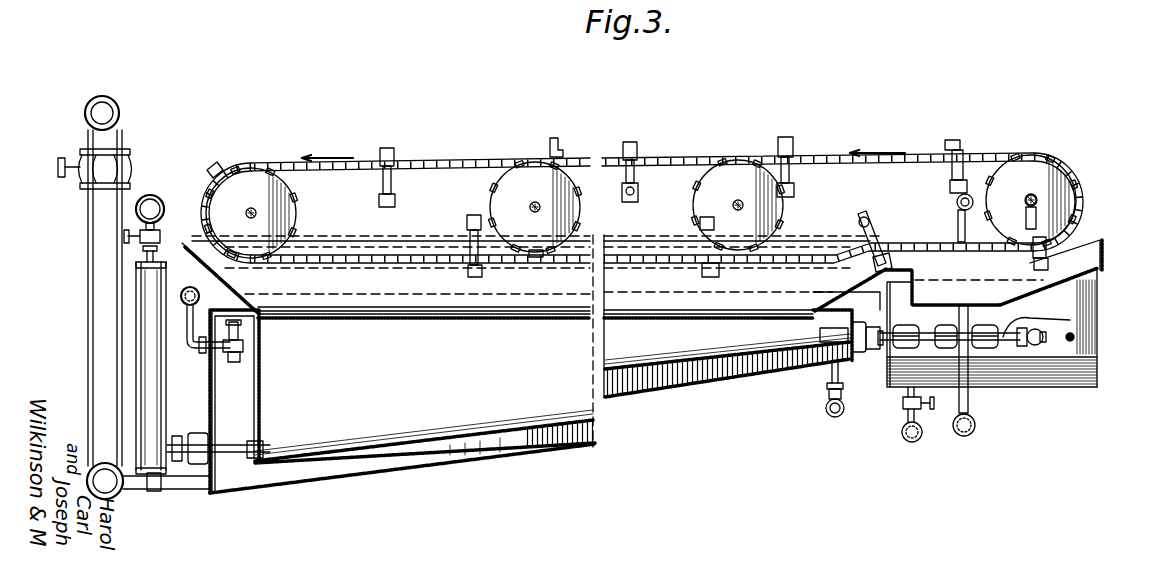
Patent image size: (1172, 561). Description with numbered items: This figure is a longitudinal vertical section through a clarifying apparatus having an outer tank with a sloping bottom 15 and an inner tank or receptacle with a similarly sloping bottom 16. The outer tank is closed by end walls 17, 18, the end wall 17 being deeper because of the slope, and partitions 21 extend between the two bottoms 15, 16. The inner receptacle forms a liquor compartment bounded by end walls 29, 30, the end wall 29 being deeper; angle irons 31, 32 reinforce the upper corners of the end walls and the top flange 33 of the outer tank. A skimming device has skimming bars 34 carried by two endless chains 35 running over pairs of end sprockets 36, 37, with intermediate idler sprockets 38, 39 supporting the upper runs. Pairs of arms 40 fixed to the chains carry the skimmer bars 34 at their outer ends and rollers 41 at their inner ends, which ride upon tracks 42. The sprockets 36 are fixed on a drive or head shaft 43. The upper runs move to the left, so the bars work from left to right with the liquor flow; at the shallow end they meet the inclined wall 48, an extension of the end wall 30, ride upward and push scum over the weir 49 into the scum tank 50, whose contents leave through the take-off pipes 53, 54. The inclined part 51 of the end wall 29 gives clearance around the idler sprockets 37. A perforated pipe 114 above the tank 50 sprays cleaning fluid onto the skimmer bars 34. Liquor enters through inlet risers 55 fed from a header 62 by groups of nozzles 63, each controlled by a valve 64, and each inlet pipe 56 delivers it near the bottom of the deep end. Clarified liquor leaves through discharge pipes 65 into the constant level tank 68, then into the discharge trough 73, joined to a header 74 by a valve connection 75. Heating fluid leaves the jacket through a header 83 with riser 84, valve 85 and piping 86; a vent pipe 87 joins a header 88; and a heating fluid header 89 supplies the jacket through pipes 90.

The sloping bottom of outer tank 15 is at (614, 402).
The sloping bottom of inner tank 16 is at (378, 442).
The end wall 17 is at (210, 376).
The end wall 18 is at (858, 362).
The partitions 21 is at (346, 488).
The end wall 29 is at (262, 392).
The end wall 30 is at (813, 319).
The angle iron 31 is at (244, 345).
The angle iron 32 is at (850, 320).
The top flange 33 is at (241, 326).
The skimming bars 34 is at (625, 150).
The endless chains 35 is at (452, 160).
The end sprockets 36 is at (1042, 158).
The end sprockets 37 is at (263, 195).
The idler sprockets 38 is at (740, 180).
The idler sprockets 39 is at (527, 188).
The arms 40 is at (470, 236).
The rollers 41 is at (636, 198).
The tracks 42 is at (350, 241).
The drive or head shaft 43 is at (1036, 197).
The inclined plane or wall 48 is at (846, 292).
The weir 49 is at (897, 270).
The scum depository or tank 50 is at (1080, 251).
The inclined part 51 is at (200, 272).
The take-off pipes 53 is at (970, 400).
The take-off pipe or header 54 is at (973, 435).
The liquor inlet risers 55 is at (140, 331).
The inlet pipe 56 is at (240, 460).
The header 62 is at (150, 194).
The discharge nozzles 63 is at (140, 252).
The valve 64 is at (124, 236).
The discharge pipes 65 is at (1067, 322).
The constant level tank 68 is at (1098, 291).
The discharge trough 73 is at (1062, 388).
The header 74 is at (912, 443).
The valve connection 75 is at (932, 409).
The header 83 is at (118, 493).
The riser 84 is at (93, 271).
The valve 85 is at (60, 167).
The piping 86 is at (86, 106).
The vent pipe 87 is at (234, 364).
The header 88 is at (181, 297).
The heating fluid header 89 is at (833, 418).
The pipes 90 is at (830, 389).
The perforated pipe 114 is at (966, 196).